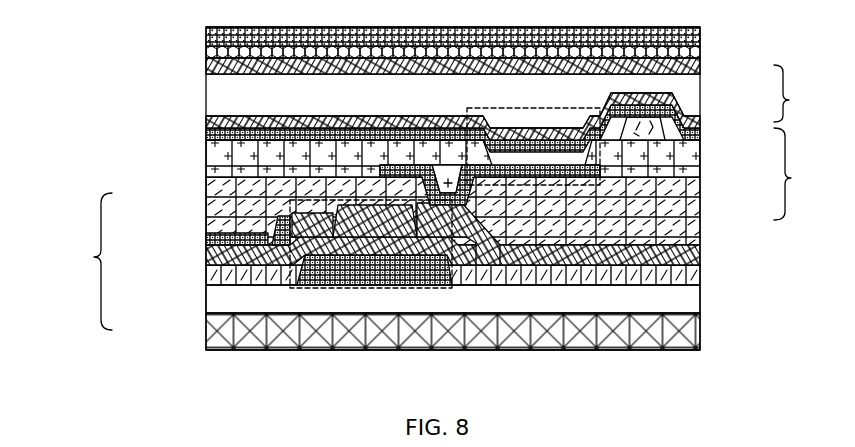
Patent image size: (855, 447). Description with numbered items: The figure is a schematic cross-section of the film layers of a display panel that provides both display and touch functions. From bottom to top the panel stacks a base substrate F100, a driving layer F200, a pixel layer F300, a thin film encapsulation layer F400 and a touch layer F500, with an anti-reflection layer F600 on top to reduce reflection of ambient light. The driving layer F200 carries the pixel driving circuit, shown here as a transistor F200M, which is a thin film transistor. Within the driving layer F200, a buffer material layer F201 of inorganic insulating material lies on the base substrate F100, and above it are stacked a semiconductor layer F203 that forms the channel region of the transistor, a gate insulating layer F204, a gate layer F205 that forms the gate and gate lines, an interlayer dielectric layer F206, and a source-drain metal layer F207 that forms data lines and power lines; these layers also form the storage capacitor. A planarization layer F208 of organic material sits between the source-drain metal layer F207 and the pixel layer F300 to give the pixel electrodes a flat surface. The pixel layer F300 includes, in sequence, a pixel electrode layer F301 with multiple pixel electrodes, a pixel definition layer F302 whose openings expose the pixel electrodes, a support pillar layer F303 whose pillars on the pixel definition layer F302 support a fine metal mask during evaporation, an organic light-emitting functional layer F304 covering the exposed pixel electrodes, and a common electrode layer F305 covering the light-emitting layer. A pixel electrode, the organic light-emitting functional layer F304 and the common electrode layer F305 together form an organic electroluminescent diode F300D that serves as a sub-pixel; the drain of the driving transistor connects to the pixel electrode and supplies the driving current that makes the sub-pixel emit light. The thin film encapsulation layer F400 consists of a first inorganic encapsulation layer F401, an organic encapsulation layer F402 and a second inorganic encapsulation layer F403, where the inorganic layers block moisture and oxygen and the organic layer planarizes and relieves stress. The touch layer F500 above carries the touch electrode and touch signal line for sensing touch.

The base substrate F100 is at (700, 331).
The driving layer F200 is at (82, 261).
The transistor F200M is at (378, 298).
The buffer material layer F201 is at (222, 306).
The semiconductor layer F203 is at (327, 283).
The gate insulating layer F204 is at (232, 262).
The gate layer F205 is at (290, 236).
The interlayer dielectric layer F206 is at (226, 241).
The source-drain metal layer F207 is at (262, 237).
The planarization layer F208 is at (268, 196).
The pixel layer F300 is at (804, 174).
The organic electroluminescent diode F300D is at (517, 98).
The pixel electrode layer F301 is at (523, 170).
The pixel definition layer F302 is at (647, 130).
The support pillar layer F303 is at (680, 147).
The organic light-emitting functional layer F304 is at (543, 157).
The common electrode layer F305 is at (675, 131).
The thin film encapsulation layer F400 is at (800, 93).
The first inorganic encapsulation layer F401 is at (673, 117).
The organic encapsulation layer F402 is at (673, 83).
The second inorganic encapsulation layer F403 is at (675, 69).
The touch layer F500 is at (212, 52).
The anti-reflection layer F600 is at (212, 36).